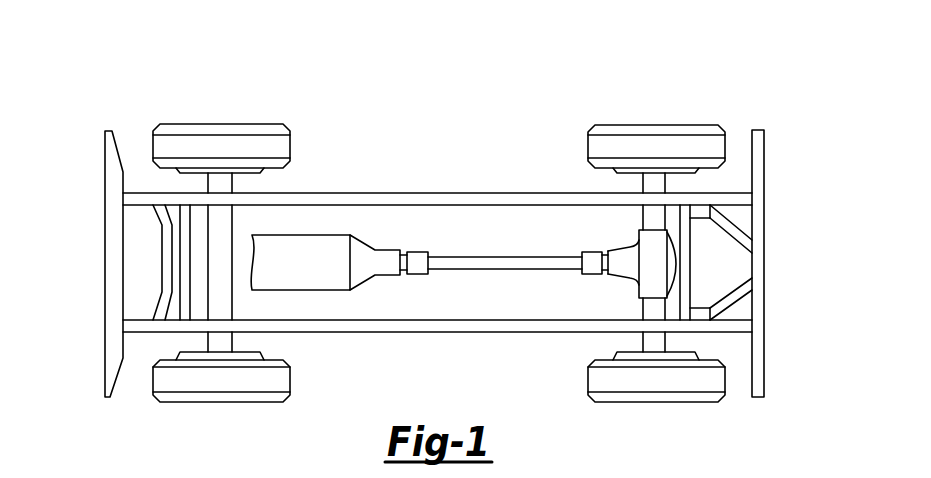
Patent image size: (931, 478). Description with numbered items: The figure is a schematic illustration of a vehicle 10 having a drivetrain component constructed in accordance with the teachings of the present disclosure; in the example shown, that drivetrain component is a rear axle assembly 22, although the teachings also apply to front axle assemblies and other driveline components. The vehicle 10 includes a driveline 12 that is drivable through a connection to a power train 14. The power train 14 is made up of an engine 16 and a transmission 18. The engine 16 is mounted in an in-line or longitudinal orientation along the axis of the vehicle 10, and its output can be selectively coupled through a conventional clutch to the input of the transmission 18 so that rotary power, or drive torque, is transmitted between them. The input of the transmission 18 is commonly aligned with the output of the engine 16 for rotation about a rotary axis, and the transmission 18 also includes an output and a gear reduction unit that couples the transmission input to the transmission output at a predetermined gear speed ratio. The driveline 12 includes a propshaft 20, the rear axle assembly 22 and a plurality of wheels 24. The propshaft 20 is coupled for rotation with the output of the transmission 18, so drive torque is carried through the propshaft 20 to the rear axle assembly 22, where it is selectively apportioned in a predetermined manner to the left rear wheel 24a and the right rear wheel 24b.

The vehicle 10 is at (393, 138).
The driveline 12 is at (604, 255).
The power train 14 is at (339, 288).
The engine 16 is at (307, 272).
The transmission 18 is at (390, 252).
The propshaft 20 is at (520, 258).
The rear axle assembly 22 is at (630, 290).
The wheels 24 is at (483, 239).
The left rear wheel 24a is at (598, 373).
The right rear wheel 24b is at (590, 138).